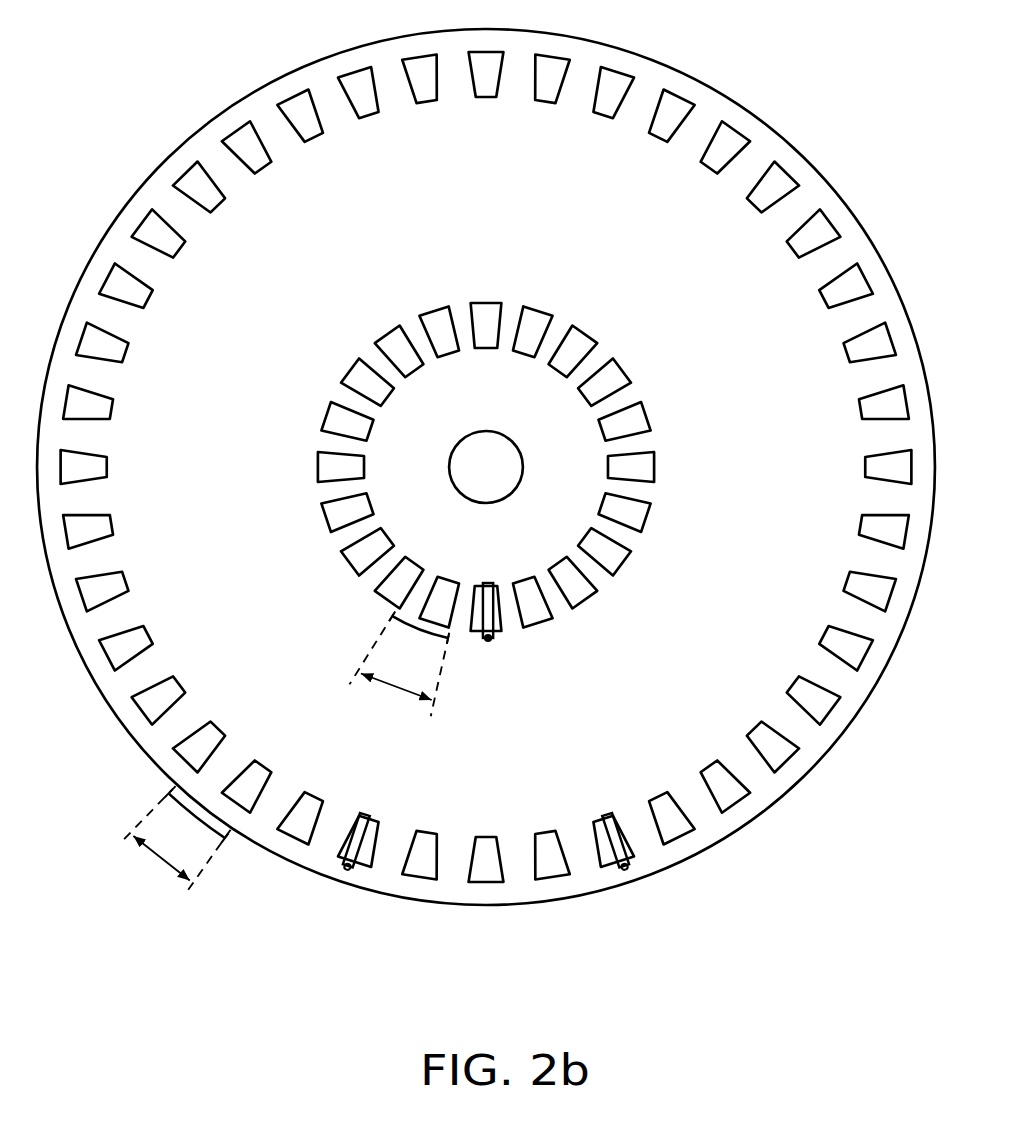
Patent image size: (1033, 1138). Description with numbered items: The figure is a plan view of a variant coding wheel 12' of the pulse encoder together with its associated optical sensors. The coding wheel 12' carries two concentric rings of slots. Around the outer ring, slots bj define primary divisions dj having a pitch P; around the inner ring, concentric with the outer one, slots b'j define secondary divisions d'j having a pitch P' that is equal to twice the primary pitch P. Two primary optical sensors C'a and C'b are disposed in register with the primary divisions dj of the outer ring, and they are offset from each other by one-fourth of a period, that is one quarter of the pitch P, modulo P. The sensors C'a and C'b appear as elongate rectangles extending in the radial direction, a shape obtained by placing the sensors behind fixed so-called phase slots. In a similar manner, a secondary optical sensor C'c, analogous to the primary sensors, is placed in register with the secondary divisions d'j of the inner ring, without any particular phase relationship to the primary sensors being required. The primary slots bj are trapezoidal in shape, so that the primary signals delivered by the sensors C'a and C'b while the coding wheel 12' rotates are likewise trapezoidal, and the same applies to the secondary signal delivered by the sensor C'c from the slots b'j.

The coding wheel 12' is at (486, 467).
The slot bj is at (254, 786).
The slot b'j is at (466, 578).
The primary optical sensor C'a is at (377, 883).
The primary optical sensor C'b is at (650, 885).
The secondary optical sensor C'c is at (524, 646).
The primary division dj is at (196, 823).
The pitch P is at (174, 841).
The secondary division d'j is at (419, 640).
The pitch P' is at (398, 665).